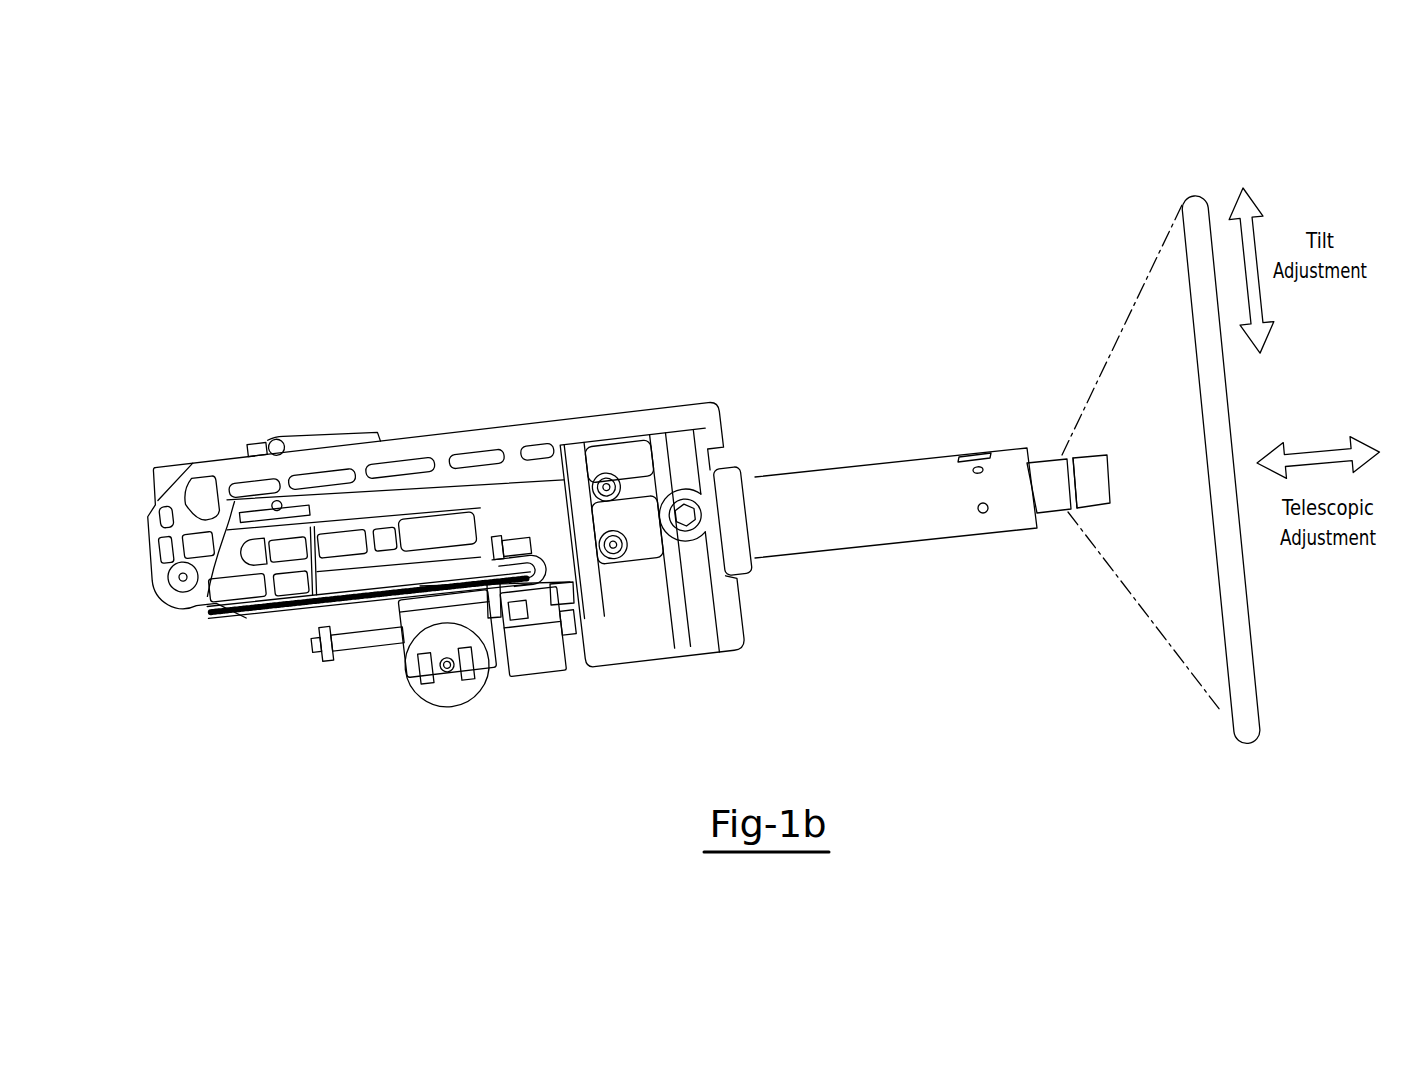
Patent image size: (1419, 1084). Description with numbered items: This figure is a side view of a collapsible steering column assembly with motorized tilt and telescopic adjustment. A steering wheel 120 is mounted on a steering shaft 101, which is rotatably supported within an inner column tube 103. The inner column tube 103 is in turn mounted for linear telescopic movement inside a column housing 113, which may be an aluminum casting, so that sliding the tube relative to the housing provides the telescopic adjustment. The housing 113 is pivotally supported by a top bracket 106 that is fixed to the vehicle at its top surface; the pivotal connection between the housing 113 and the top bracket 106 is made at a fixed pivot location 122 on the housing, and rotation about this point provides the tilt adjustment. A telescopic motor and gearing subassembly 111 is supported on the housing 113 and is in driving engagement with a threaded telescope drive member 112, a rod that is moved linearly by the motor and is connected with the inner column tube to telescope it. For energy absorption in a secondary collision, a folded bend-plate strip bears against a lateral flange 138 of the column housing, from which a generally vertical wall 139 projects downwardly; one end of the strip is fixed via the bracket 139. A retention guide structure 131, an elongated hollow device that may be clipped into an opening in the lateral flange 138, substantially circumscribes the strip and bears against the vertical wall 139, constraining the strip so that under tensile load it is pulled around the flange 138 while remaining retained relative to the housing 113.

The steering shaft 101 is at (1043, 464).
The inner column tube 103 is at (898, 470).
The top bracket 106 is at (664, 414).
The telescopic motor and gearing subassembly 111 is at (426, 708).
The threaded telescope drive member 112 is at (356, 655).
The housing 113 is at (250, 574).
The steering wheel 120 is at (1194, 195).
The fixed pivot location 122 is at (174, 584).
The retention guide structure 131 is at (505, 540).
The lateral flange 138 is at (306, 612).
The vertical wall 139 is at (622, 580).